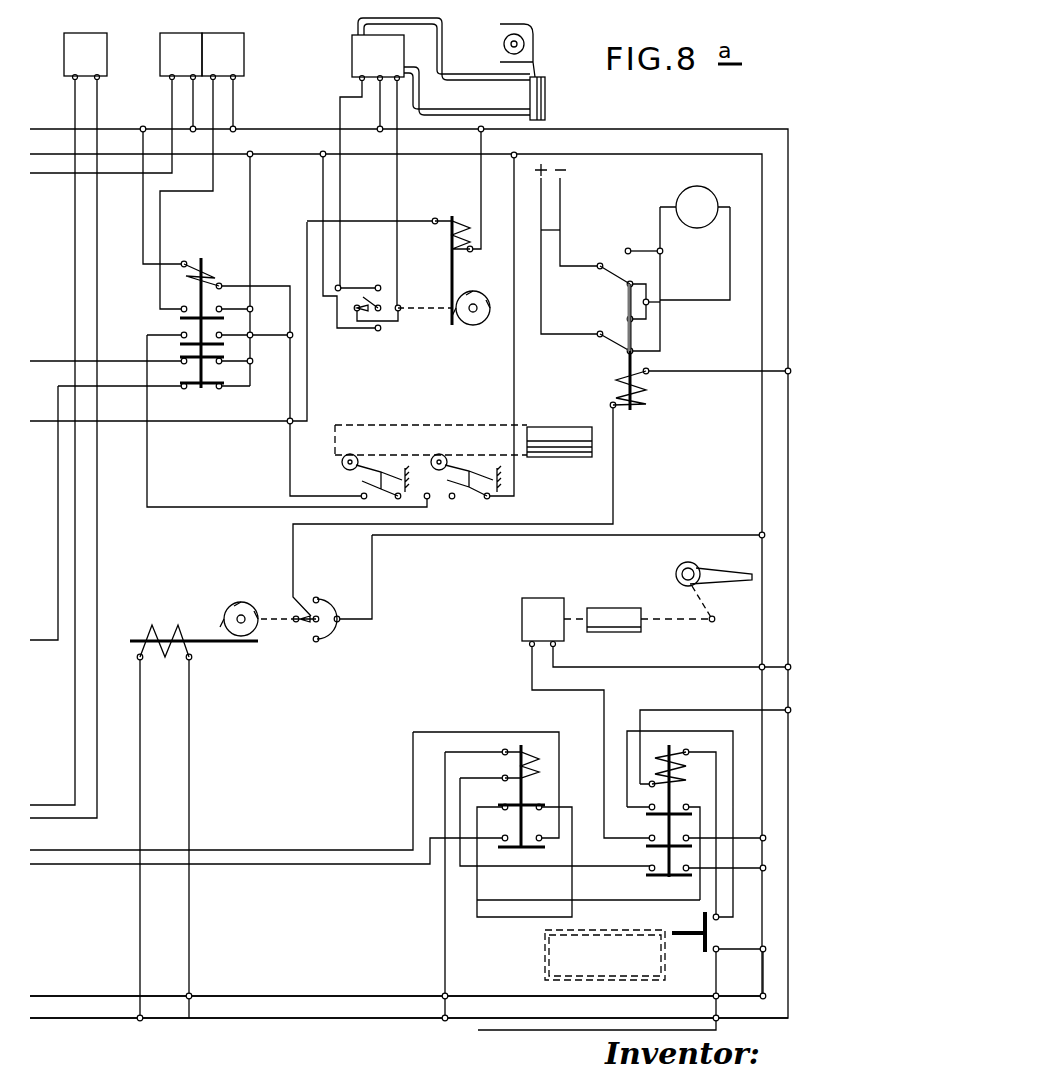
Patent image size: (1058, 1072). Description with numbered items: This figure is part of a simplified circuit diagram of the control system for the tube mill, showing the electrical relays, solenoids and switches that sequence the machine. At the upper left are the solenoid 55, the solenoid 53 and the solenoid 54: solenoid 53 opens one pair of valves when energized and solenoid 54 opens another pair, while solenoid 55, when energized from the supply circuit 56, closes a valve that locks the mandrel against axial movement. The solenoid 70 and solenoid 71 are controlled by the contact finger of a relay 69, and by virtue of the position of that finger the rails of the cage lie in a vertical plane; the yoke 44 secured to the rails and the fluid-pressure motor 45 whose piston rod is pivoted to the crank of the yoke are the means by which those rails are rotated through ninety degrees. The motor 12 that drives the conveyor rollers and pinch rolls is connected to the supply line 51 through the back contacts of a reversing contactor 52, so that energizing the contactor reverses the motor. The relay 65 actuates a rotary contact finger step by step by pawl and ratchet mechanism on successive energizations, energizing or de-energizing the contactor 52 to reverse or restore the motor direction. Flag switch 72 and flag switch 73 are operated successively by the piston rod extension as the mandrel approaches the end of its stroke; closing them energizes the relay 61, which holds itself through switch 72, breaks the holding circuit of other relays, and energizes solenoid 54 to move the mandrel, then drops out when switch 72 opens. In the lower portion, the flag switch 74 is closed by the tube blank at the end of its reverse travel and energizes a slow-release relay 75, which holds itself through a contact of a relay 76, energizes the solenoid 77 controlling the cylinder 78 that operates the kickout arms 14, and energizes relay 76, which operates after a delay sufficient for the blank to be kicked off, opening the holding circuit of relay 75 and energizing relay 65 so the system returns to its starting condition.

The solenoid 55 is at (64, 57).
The solenoid 53 is at (160, 57).
The solenoid 54 is at (244, 57).
The solenoid 70 is at (352, 58).
The solenoid 71 is at (398, 57).
The yoke 44 is at (530, 40).
The fluid-pressure motor 45 is at (545, 97).
The supply circuit 56 is at (660, 154).
The motor 12 is at (676, 200).
The supply line 51 is at (547, 228).
The relay 61 is at (205, 282).
The relay 69 is at (452, 254).
The reversing contactor 52 is at (613, 380).
The flag switch 73 is at (360, 492).
The flag switch 72 is at (472, 499).
The relay 65 is at (184, 639).
The solenoid 77 is at (522, 610).
The cylinder 78 is at (612, 610).
The kickout arms 14 is at (720, 582).
The relay 76 is at (502, 770).
The slow-release relay 75 is at (682, 770).
The flag switch 74 is at (720, 932).